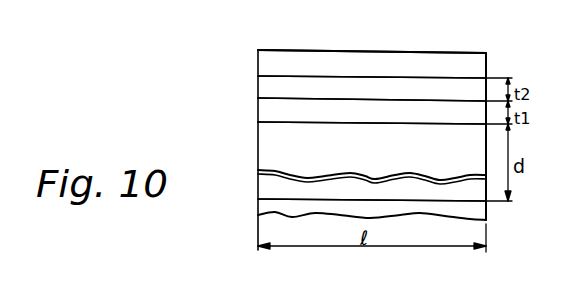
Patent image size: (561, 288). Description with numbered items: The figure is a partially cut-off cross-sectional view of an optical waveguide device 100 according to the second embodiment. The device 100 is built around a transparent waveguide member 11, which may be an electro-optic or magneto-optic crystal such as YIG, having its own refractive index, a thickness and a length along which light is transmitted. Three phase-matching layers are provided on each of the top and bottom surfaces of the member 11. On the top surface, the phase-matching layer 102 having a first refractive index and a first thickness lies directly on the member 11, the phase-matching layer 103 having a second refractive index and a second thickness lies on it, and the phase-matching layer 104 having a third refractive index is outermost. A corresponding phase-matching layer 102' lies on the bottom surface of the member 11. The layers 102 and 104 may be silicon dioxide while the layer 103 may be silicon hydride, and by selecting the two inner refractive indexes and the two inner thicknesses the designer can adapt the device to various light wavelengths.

The optical waveguide device 100 is at (432, 46).
The phase-matching layer 104 is at (262, 57).
The phase-matching layer 103 is at (262, 85).
The phase-matching layer 102 is at (339, 115).
The transparent waveguide member 11 is at (262, 156).
The phase-matching layer 102' is at (338, 213).